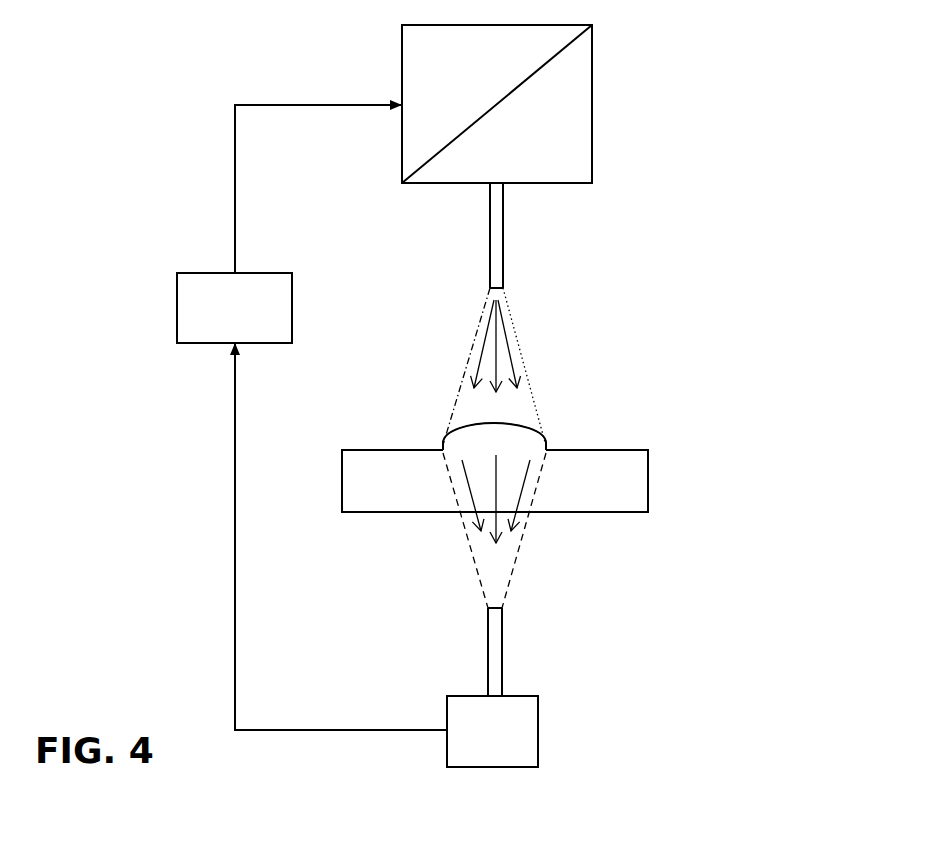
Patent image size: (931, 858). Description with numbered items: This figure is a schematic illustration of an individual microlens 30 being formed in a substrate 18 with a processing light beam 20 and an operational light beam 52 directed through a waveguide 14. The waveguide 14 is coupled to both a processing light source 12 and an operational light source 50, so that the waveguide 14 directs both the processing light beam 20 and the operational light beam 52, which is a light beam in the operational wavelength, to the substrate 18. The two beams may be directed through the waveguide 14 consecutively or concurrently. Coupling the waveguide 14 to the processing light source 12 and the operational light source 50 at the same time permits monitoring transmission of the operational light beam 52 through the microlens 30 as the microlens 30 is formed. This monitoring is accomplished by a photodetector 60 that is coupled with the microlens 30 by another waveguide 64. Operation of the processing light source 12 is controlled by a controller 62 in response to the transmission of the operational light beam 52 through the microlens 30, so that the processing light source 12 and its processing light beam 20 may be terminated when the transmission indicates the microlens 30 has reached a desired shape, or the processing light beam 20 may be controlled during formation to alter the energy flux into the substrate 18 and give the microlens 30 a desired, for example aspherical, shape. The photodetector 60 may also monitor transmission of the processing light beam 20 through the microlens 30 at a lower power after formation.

The processing light source 12 is at (438, 93).
The operational light source 50 is at (521, 156).
The waveguide 14 is at (505, 232).
The operational light beam 52 is at (525, 372).
The microlens 30 is at (480, 422).
The processing light beam 20 is at (509, 417).
The substrate 18 is at (412, 474).
The controller 62 is at (213, 318).
The photodetector 60 is at (477, 750).
The waveguide 64 is at (498, 645).